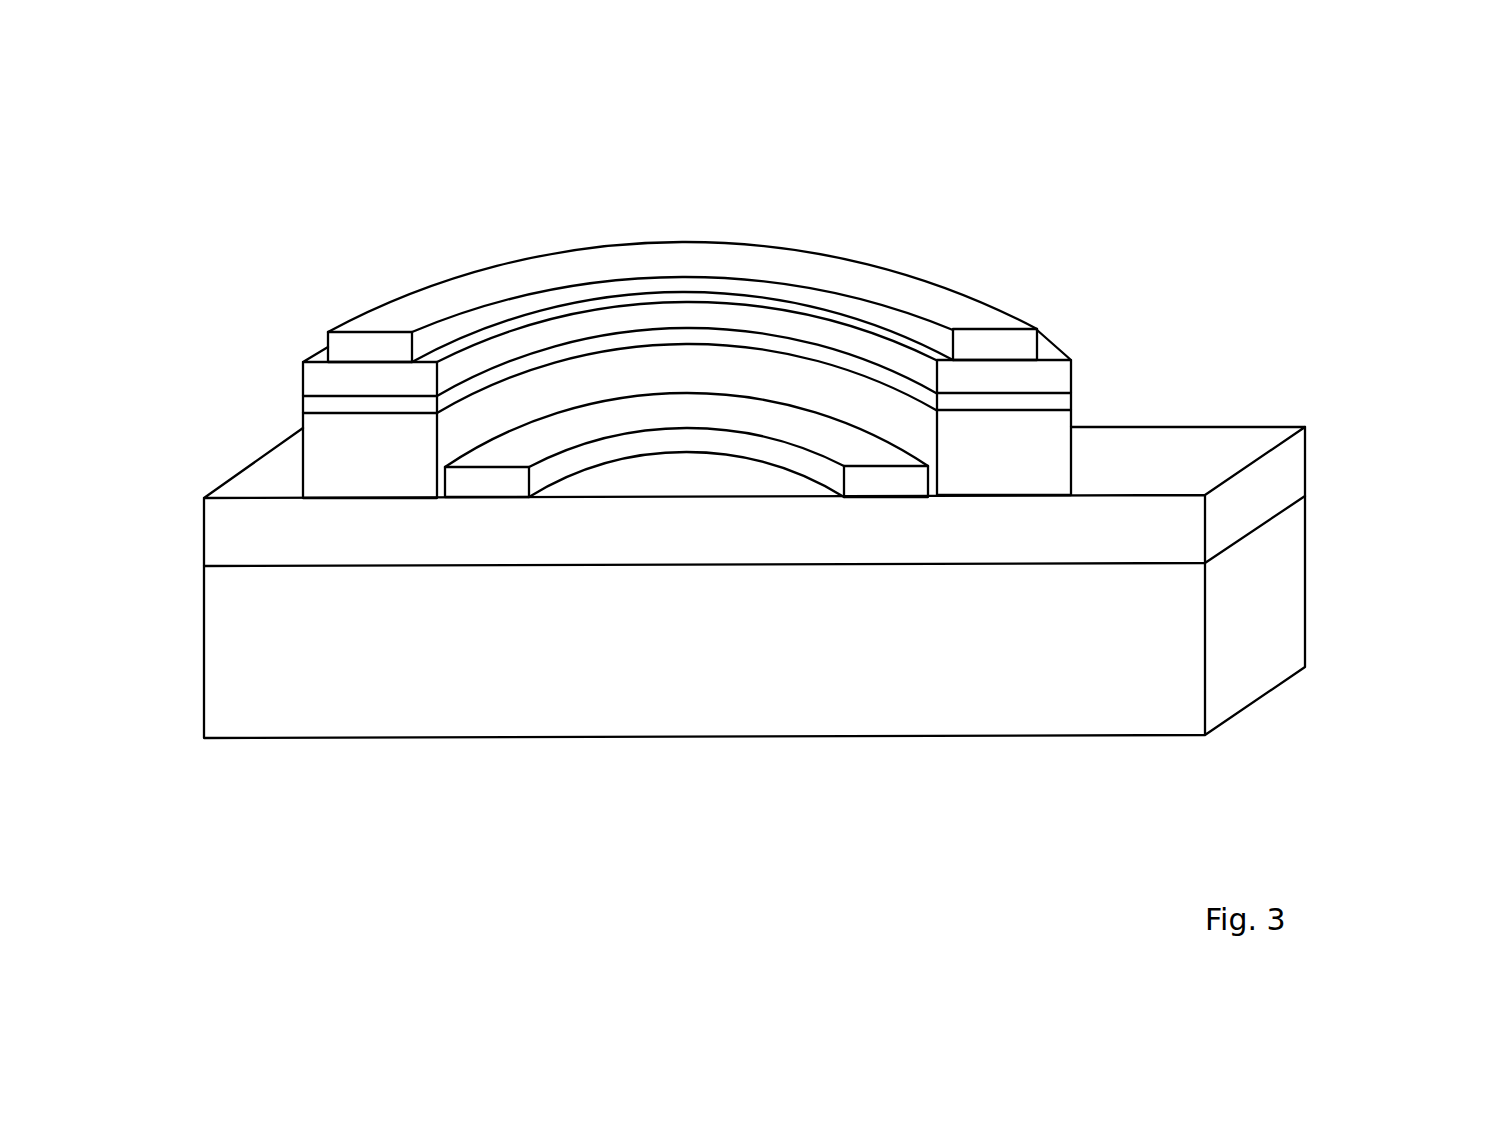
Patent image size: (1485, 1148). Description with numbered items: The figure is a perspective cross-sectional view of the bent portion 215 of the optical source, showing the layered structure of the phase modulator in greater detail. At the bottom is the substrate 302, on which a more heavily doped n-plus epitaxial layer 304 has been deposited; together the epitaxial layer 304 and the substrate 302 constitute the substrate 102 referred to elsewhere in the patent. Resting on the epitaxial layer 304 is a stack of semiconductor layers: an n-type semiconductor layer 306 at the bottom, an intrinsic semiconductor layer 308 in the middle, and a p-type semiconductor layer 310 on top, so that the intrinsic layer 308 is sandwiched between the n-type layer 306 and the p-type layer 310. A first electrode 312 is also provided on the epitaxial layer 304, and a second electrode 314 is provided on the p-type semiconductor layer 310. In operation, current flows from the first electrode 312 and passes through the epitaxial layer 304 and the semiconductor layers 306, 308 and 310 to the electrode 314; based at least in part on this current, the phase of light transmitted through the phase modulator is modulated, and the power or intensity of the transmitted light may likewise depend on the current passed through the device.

The substrate 102 is at (179, 503).
The bent portion 215 is at (405, 196).
The substrate 302 is at (1305, 607).
The epitaxial layer 304 is at (1305, 453).
The n-type semiconductor layer 306 is at (1072, 452).
The intrinsic semiconductor layer 308 is at (1072, 400).
The p-type semiconductor layer 310 is at (1072, 358).
The first electrode 312 is at (883, 497).
The electrode 314 is at (766, 243).